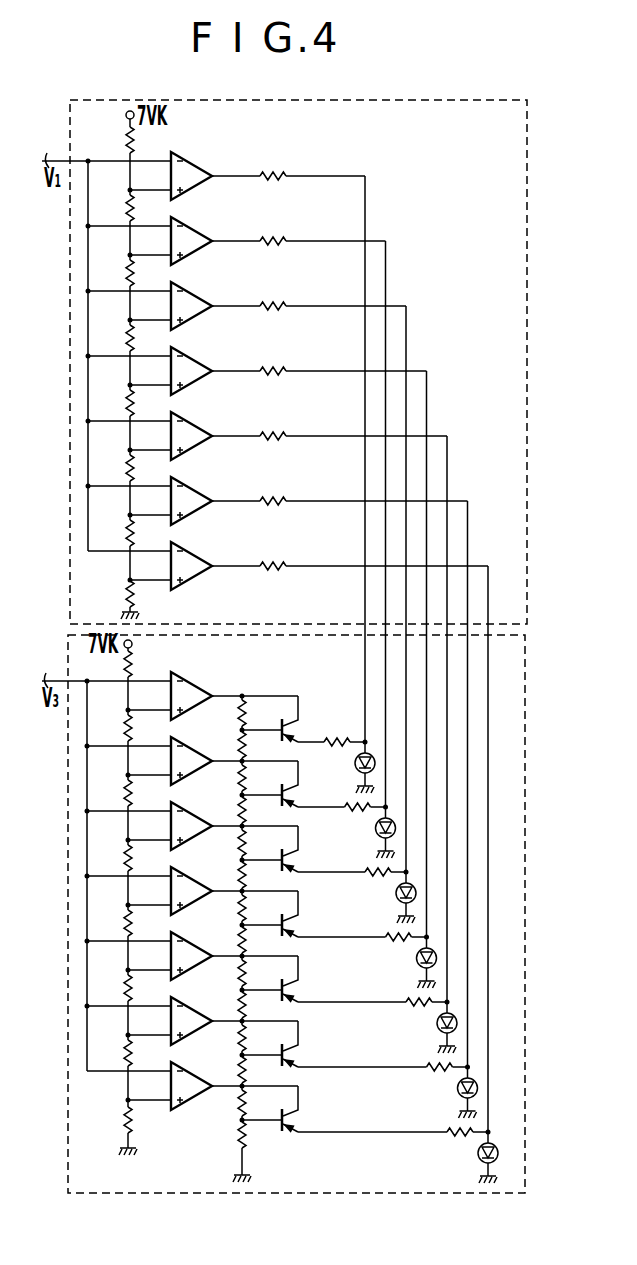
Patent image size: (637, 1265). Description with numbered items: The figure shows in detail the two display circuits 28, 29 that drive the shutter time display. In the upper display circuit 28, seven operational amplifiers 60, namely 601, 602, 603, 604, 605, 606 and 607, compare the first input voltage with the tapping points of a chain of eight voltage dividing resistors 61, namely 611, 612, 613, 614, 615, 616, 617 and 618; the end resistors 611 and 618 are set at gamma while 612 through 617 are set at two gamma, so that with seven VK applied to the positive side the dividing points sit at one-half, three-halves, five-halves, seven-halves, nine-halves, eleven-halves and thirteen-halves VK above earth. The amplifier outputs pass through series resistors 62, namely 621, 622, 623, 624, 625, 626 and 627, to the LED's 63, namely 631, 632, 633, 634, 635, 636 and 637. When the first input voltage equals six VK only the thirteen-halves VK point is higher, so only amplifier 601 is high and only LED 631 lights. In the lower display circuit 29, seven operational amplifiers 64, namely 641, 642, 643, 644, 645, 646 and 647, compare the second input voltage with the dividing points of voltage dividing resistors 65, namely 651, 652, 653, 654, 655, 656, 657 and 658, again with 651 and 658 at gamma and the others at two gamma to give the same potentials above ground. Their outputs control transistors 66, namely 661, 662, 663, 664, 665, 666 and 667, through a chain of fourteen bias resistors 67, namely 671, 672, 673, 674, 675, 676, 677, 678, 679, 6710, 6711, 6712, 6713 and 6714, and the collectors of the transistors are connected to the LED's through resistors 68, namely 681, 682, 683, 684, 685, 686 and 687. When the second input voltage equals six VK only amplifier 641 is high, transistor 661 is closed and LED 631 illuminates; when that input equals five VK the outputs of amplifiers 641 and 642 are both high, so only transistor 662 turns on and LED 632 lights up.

The display circuit 28 is at (529, 334).
The display circuit 29 is at (527, 892).
The operational amplifiers 60 is at (200, 361).
The operational amplifier 601 is at (191, 164).
The operational amplifier 602 is at (191, 229).
The operational amplifier 603 is at (191, 294).
The operational amplifier 604 is at (191, 359).
The operational amplifier 605 is at (191, 424).
The operational amplifier 606 is at (191, 489).
The operational amplifier 607 is at (191, 554).
The voltage dividing resistors 61 is at (144, 370).
The voltage dividing resistor 611 is at (144, 144).
The voltage dividing resistor 612 is at (144, 212).
The voltage dividing resistor 613 is at (144, 277).
The voltage dividing resistor 614 is at (144, 342).
The voltage dividing resistor 615 is at (144, 407).
The voltage dividing resistor 616 is at (144, 472).
The voltage dividing resistor 617 is at (144, 537).
The voltage dividing resistor 618 is at (144, 597).
The resistors 62 is at (273, 358).
The resistor 621 is at (273, 163).
The resistor 622 is at (273, 228).
The resistor 623 is at (273, 293).
The resistor 624 is at (273, 358).
The resistor 625 is at (273, 423).
The resistor 626 is at (273, 488).
The resistor 627 is at (273, 553).
The LED's 63 is at (403, 973).
The LED 631 is at (355, 780).
The LED 632 is at (376, 845).
The LED 633 is at (396, 910).
The LED 634 is at (416, 975).
The LED 635 is at (437, 1040).
The LED 636 is at (458, 1105).
The LED 637 is at (478, 1170).
The operational amplifiers 64 is at (197, 881).
The operational amplifier 641 is at (189, 683).
The operational amplifier 642 is at (189, 748).
The operational amplifier 643 is at (189, 813).
The operational amplifier 644 is at (189, 878).
The operational amplifier 645 is at (189, 943).
The operational amplifier 646 is at (189, 1008).
The operational amplifier 647 is at (189, 1073).
The voltage dividing resistors 65 is at (142, 896).
The voltage dividing resistor 651 is at (142, 668).
The voltage dividing resistor 652 is at (142, 732).
The voltage dividing resistor 653 is at (142, 797).
The voltage dividing resistor 654 is at (142, 862).
The voltage dividing resistor 655 is at (142, 927).
The voltage dividing resistor 656 is at (142, 992).
The voltage dividing resistor 657 is at (142, 1057).
The voltage dividing resistor 658 is at (142, 1124).
The transistors 66 is at (303, 914).
The transistor 661 is at (291, 730).
The transistor 662 is at (291, 795).
The transistor 663 is at (291, 860).
The transistor 664 is at (291, 925).
The transistor 665 is at (291, 990).
The transistor 666 is at (291, 1055).
The transistor 667 is at (291, 1120).
The bias resistors 67 is at (258, 927).
The bias resistor 671 is at (254, 716).
The bias resistor 672 is at (254, 748).
The bias resistor 673 is at (254, 781).
The bias resistor 674 is at (254, 813).
The bias resistor 675 is at (254, 846).
The bias resistor 676 is at (254, 878).
The bias resistor 677 is at (254, 911).
The bias resistor 678 is at (254, 943).
The bias resistor 679 is at (254, 976).
The bias resistor 6710 is at (258, 1008).
The bias resistor 6711 is at (258, 1041).
The bias resistor 6712 is at (258, 1073).
The bias resistor 6713 is at (258, 1106).
The bias resistor 6714 is at (258, 1138).
The resistors 68 is at (390, 951).
The resistor 681 is at (341, 747).
The resistor 682 is at (362, 812).
The resistor 683 is at (382, 877).
The resistor 684 is at (402, 942).
The resistor 685 is at (423, 1007).
The resistor 686 is at (444, 1072).
The resistor 687 is at (464, 1137).